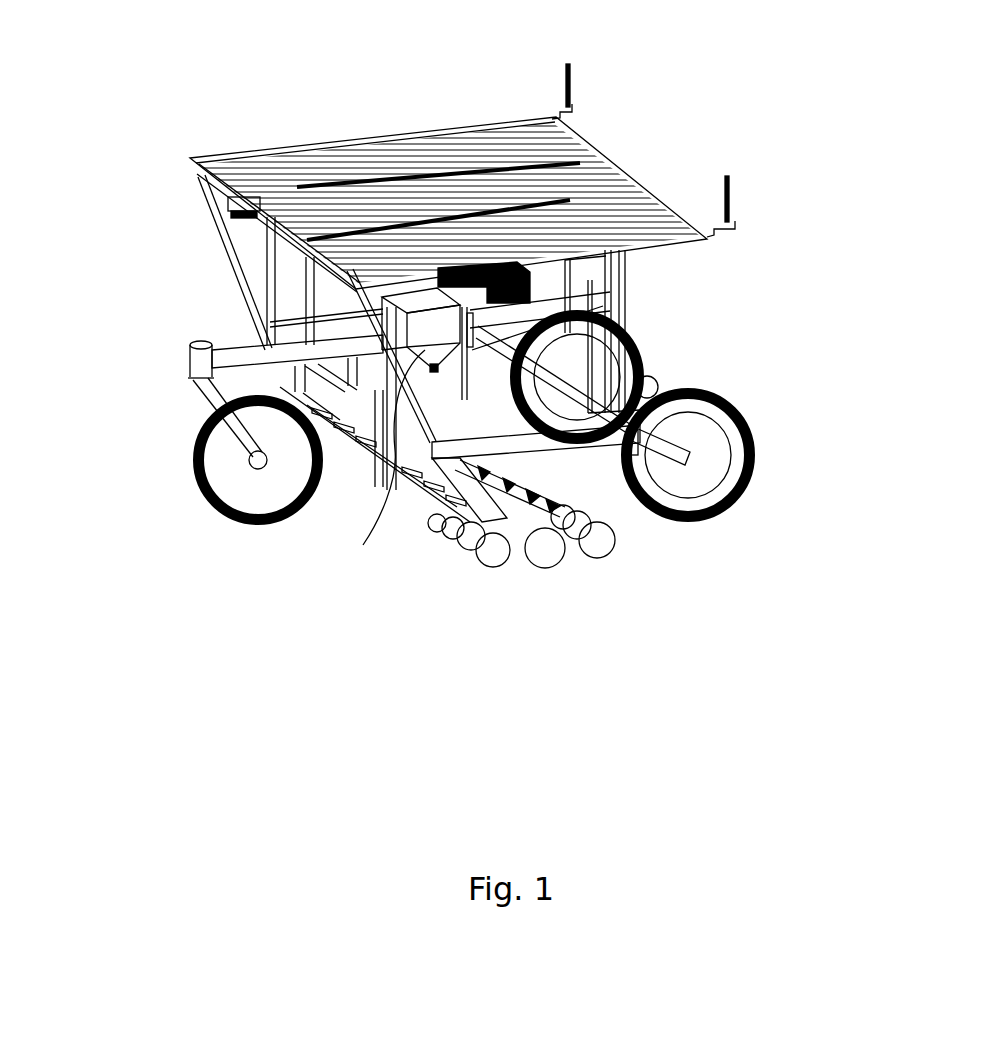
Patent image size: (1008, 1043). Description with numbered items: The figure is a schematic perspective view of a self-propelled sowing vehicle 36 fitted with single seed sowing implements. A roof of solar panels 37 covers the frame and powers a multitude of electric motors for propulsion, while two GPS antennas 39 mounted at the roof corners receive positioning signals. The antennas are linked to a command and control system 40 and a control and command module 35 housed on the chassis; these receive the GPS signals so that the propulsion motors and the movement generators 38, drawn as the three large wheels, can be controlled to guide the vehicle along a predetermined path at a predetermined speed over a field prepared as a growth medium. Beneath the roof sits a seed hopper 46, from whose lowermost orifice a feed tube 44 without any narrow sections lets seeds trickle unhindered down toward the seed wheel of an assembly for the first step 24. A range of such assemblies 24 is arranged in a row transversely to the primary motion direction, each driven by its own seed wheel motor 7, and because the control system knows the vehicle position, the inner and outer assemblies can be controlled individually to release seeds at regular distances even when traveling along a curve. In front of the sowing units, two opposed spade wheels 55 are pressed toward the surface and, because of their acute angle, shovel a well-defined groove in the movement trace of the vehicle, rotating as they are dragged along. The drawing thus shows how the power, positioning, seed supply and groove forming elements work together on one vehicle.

The vehicle 36 is at (148, 281).
The solar panels 37 is at (448, 137).
The GPS antennas 39 is at (571, 74).
The control and command module 35 is at (598, 292).
The command and control system 40 is at (568, 316).
The movement generators 38 is at (677, 360).
The seed hopper 46 is at (383, 463).
The feed tube 44 is at (434, 372).
The seed wheel motor 7 is at (572, 495).
The spade wheels 55 is at (530, 568).
The assembly for first step 24 is at (552, 568).